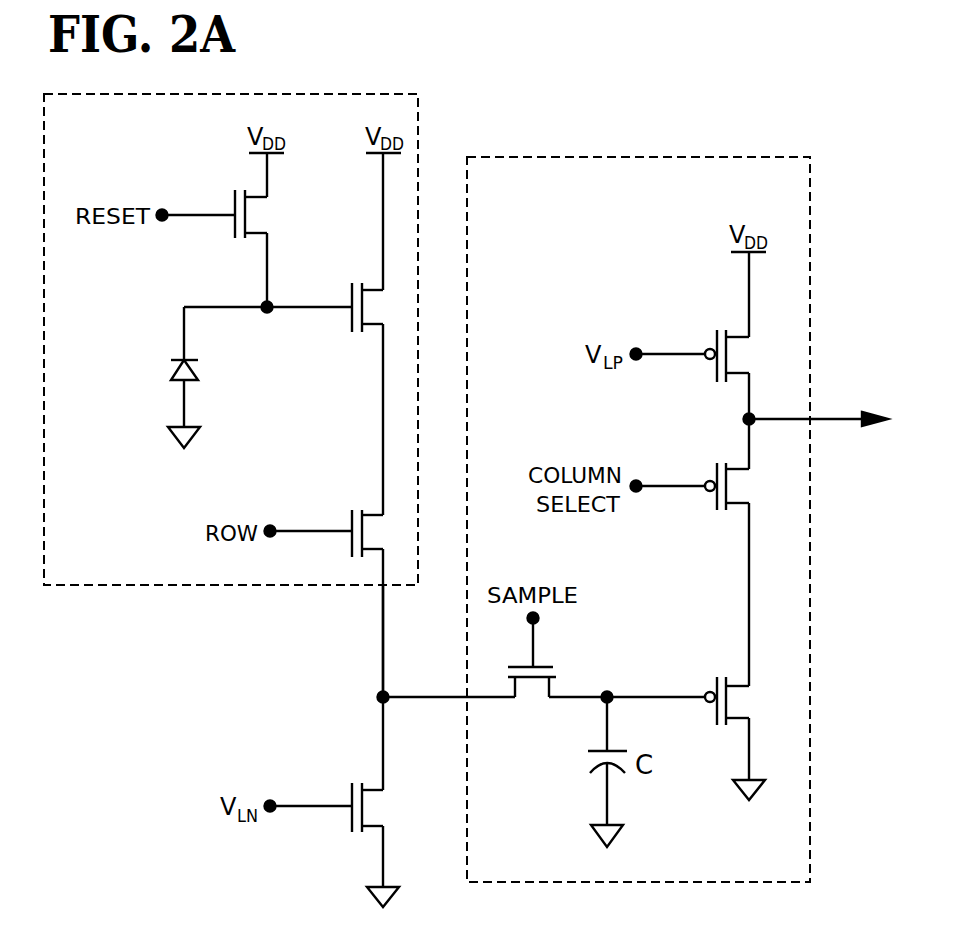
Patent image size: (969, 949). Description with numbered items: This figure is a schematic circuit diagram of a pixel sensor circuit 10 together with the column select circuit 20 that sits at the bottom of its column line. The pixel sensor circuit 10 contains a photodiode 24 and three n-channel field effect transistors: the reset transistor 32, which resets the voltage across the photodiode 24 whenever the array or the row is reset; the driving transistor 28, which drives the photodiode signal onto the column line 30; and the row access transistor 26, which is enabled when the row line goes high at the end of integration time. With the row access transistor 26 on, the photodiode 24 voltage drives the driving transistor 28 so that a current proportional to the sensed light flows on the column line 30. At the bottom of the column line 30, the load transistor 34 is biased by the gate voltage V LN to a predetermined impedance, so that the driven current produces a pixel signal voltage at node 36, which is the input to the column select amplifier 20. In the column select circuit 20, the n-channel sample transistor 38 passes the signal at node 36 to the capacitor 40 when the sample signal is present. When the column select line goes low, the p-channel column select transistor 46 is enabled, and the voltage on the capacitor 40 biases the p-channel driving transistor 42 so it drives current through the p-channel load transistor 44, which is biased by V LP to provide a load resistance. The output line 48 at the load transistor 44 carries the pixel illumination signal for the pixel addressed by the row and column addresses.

The pixel sensor circuit 10 is at (345, 94).
The column select circuit 20 is at (620, 157).
The photodiode 24 is at (178, 372).
The row access transistor 26 is at (352, 510).
The driving transistor 28 is at (352, 283).
The column line 30 is at (383, 625).
The reset transistor 32 is at (234, 190).
The load transistor 34 is at (372, 808).
The node 36 is at (380, 699).
The sample transistor 38 is at (558, 676).
The capacitor 40 is at (596, 750).
The driving transistor 42 is at (738, 700).
The load transistor 44 is at (738, 355).
The column select transistor 46 is at (738, 494).
The output line 48 is at (823, 419).